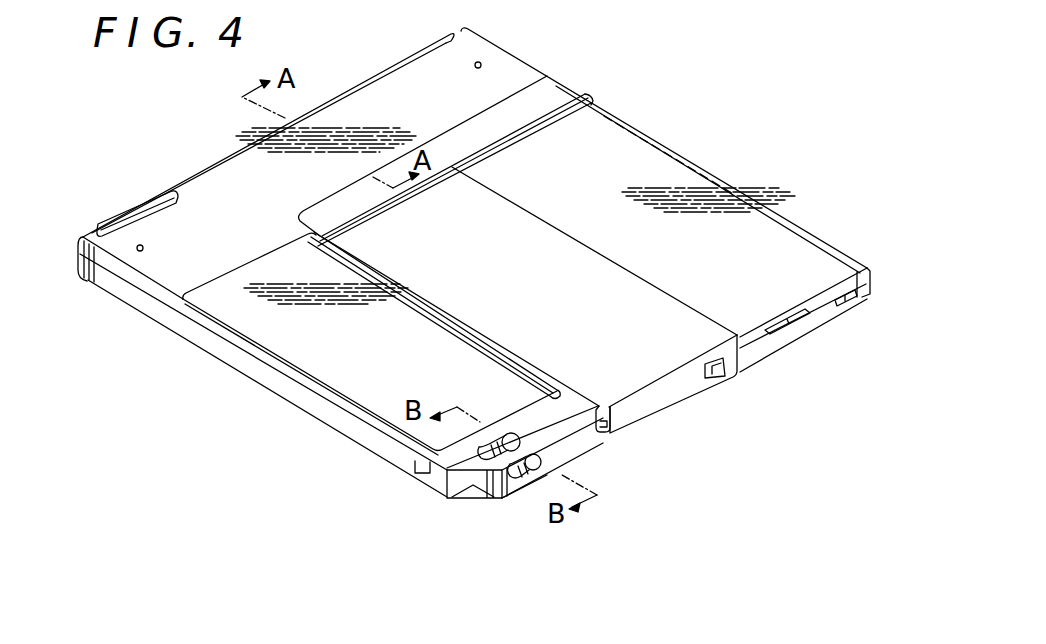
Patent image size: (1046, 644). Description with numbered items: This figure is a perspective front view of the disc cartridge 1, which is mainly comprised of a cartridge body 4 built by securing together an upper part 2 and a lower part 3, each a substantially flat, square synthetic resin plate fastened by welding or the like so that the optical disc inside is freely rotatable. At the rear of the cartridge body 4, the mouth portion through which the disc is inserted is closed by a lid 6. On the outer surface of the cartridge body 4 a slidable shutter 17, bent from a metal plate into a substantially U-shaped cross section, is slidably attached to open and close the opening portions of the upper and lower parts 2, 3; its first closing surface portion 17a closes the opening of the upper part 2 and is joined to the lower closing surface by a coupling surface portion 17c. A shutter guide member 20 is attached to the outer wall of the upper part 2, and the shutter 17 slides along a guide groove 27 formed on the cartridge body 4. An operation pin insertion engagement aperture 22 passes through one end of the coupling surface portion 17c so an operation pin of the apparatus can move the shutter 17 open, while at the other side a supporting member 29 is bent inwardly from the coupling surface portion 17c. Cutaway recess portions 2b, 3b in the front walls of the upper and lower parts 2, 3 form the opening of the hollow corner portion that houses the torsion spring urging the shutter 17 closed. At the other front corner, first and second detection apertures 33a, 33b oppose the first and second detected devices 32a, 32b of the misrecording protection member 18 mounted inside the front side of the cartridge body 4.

The disc cartridge 1 is at (706, 144).
The upper part 2 is at (172, 312).
The lower part 3 is at (223, 357).
The cartridge body 4 is at (210, 407).
The lid 6 is at (193, 173).
The shutter guide member 20 is at (556, 98).
The slidable shutter 17 is at (647, 282).
The first closing surface portion 17a is at (540, 243).
The coupling surface portion 17c is at (663, 399).
The guide groove 27 is at (594, 404).
The supporting member 29 is at (604, 432).
The operation pin insertion engagement aperture 22 is at (712, 383).
The cutaway recess portion 2b is at (783, 325).
The cutaway recess portion 3b is at (833, 301).
The first detected device 32a is at (543, 465).
The second detected device 32b is at (507, 442).
The misrecording protection member 18 is at (520, 477).
The first detection aperture 33a is at (510, 481).
The second detection aperture 33b is at (445, 490).